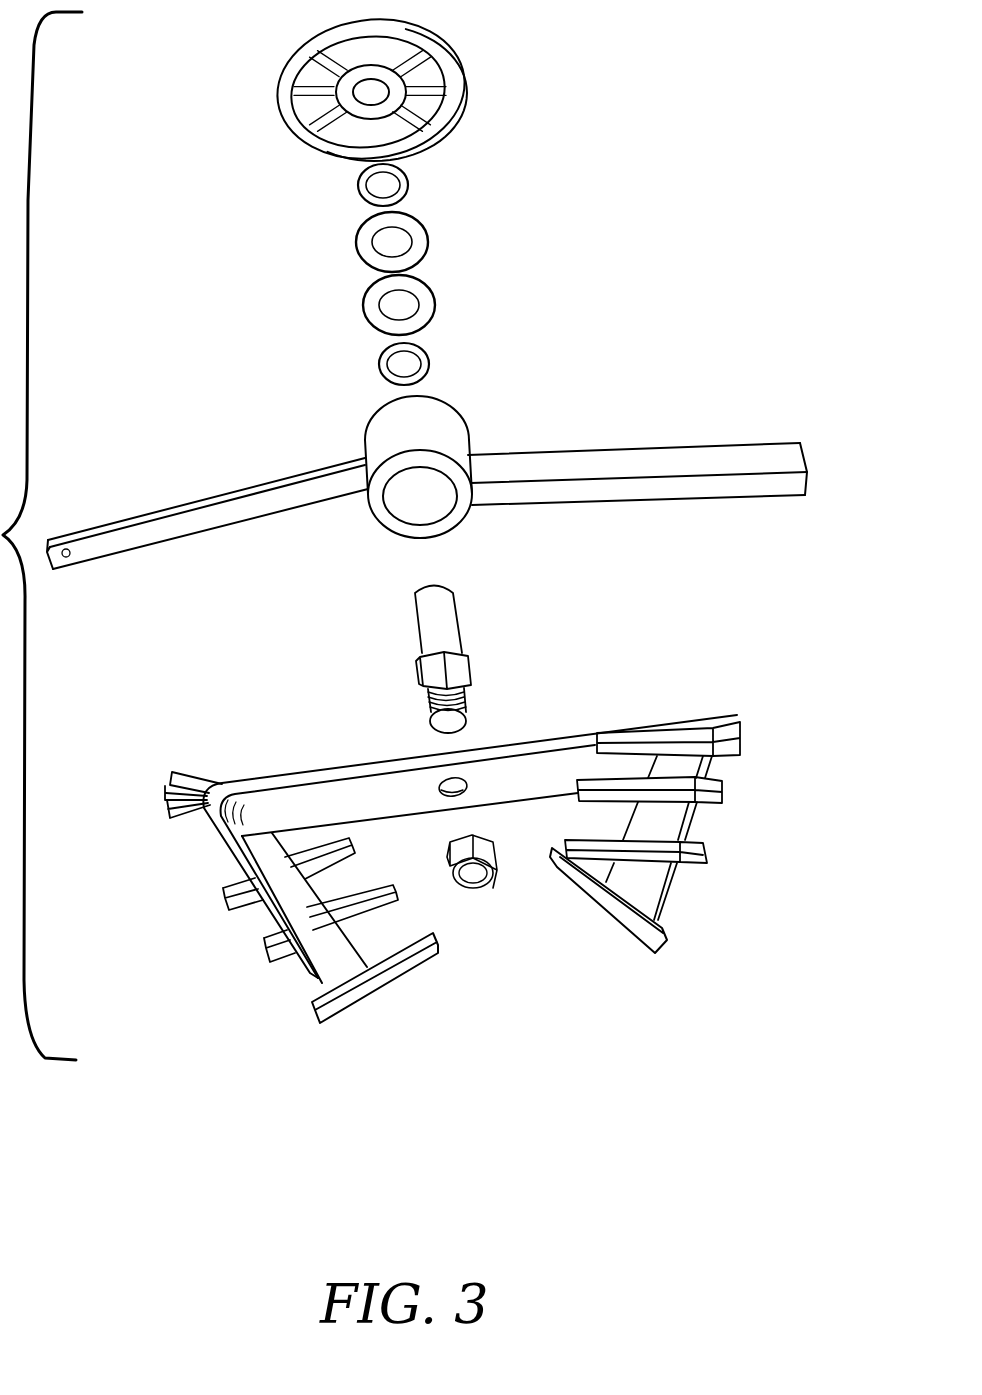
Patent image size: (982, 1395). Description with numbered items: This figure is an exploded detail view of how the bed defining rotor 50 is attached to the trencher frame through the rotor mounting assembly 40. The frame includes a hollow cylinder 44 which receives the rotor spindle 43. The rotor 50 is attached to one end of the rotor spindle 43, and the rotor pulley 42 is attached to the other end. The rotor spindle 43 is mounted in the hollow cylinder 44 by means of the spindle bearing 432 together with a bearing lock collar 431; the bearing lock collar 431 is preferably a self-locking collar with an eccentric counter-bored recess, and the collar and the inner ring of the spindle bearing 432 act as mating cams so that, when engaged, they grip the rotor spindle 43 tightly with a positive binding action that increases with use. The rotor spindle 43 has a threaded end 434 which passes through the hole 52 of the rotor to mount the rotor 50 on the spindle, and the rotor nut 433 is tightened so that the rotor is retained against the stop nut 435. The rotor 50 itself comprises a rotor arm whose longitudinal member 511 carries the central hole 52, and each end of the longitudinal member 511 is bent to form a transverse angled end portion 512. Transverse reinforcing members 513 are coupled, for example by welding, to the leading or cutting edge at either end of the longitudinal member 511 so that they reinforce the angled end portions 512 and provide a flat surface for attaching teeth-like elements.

The rotor mounting assembly 40 is at (606, 91).
The rotor pulley 42 is at (436, 43).
The bearing lock collar 431 is at (412, 186).
The spindle bearing 432 is at (364, 306).
The hollow cylinder 44 is at (449, 416).
The rotor spindle 43 is at (446, 660).
The stop nut 435 is at (430, 669).
The threaded end 434 is at (462, 703).
The rotor nut 433 is at (495, 877).
The rotor 50 is at (478, 868).
The longitudinal member 511 is at (451, 846).
The central hole 52 is at (432, 783).
The transverse reinforcing members 513 is at (273, 862).
The transverse angled end portion 512 is at (300, 963).